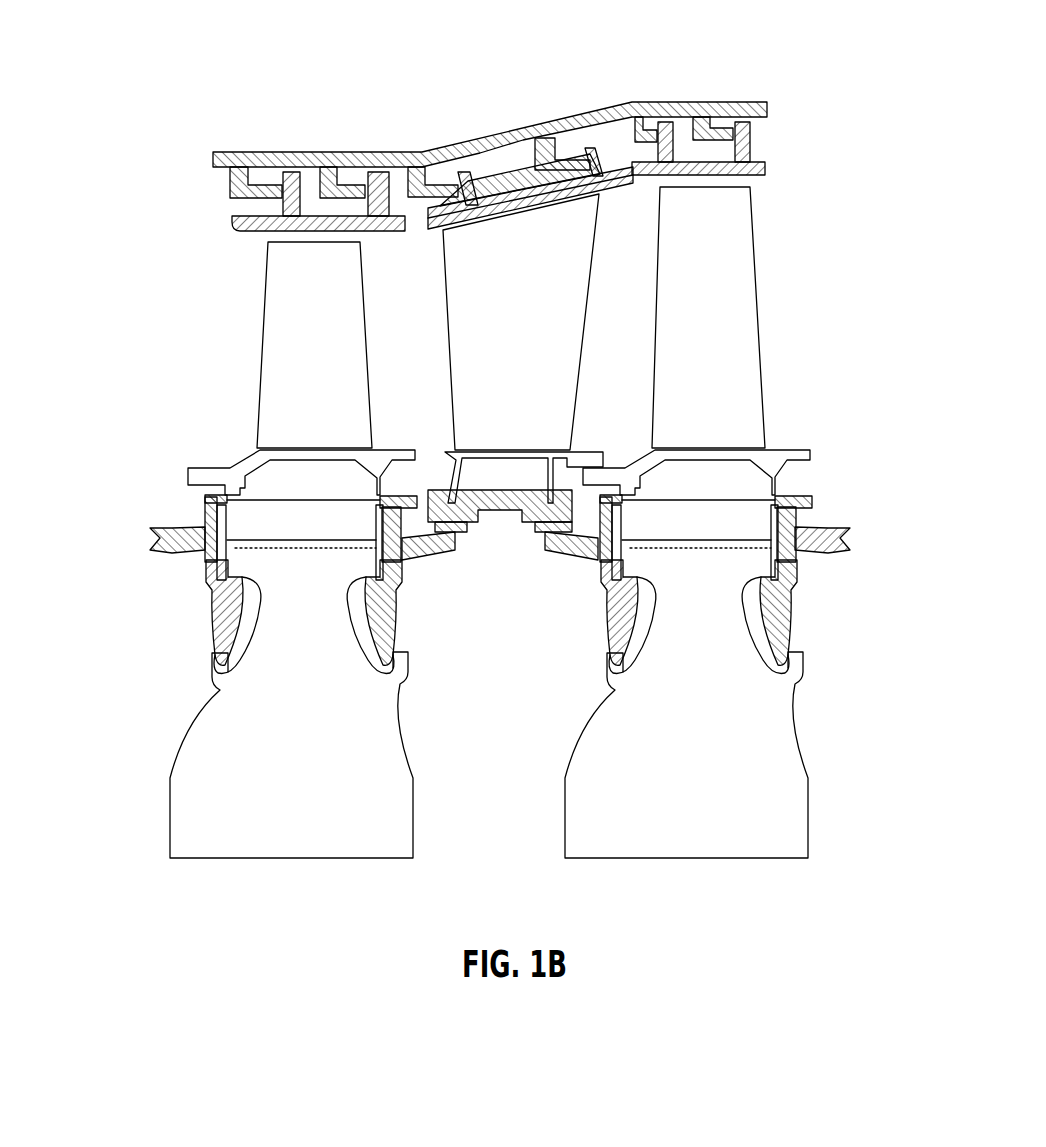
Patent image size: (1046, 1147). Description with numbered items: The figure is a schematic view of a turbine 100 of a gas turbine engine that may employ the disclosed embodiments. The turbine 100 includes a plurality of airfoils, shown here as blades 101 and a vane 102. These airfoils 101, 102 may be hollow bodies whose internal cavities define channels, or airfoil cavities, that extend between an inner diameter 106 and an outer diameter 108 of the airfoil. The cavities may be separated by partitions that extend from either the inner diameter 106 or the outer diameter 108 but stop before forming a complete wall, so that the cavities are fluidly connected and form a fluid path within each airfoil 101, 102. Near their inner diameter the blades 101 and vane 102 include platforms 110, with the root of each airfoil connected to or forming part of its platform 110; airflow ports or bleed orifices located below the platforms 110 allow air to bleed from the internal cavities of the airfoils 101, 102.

The turbine 100 is at (168, 48).
The blade 101 is at (347, 308).
The vane 102 is at (557, 345).
The inner diameter 106 is at (444, 437).
The outer diameter 108 is at (229, 288).
The platform 110 is at (594, 452).